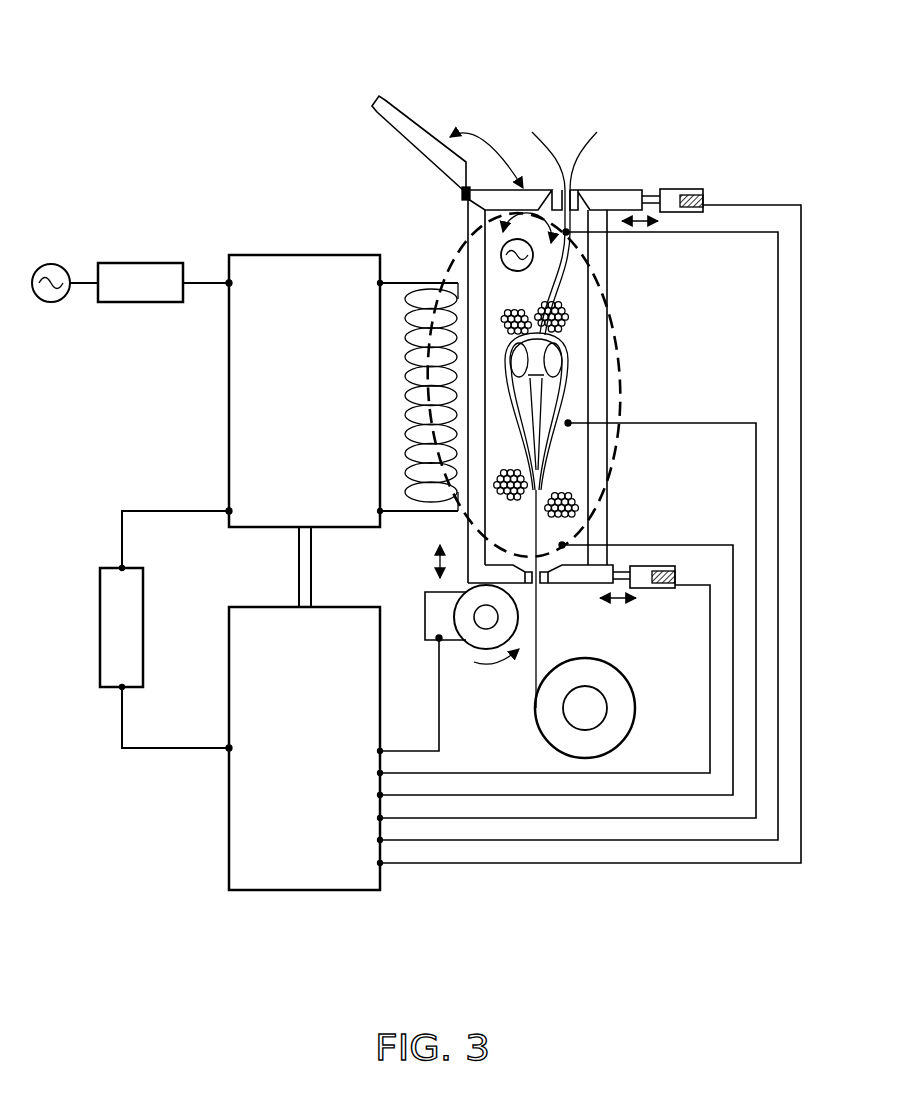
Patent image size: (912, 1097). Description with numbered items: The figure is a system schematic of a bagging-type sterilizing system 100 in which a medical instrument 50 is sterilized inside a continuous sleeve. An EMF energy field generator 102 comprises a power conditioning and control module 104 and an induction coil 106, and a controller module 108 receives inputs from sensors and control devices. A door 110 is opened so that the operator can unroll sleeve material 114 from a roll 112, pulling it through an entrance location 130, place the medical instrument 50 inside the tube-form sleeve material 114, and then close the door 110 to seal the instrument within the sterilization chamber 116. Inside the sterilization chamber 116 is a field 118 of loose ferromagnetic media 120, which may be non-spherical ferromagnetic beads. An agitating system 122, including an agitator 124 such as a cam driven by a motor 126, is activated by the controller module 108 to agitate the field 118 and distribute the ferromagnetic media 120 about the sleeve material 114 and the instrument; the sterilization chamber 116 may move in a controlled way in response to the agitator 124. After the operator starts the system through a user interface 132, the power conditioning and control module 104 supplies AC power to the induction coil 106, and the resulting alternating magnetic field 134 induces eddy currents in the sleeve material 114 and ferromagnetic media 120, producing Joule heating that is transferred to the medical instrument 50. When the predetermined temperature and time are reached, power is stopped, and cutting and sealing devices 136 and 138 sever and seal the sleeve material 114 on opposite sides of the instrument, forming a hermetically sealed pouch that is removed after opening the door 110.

The medical instrument 50 is at (510, 474).
The sterilizing system 100 is at (648, 85).
The EMF energy field generator 102 is at (180, 442).
The power conditioning and control module 104 is at (229, 362).
The induction coil 106 is at (410, 284).
The controller module 108 is at (278, 898).
The door 110 is at (400, 109).
The roll 112 is at (624, 740).
The sleeve material 114 is at (543, 668).
The sterilization chamber 116 is at (577, 390).
The field of loose ferromagnetic media 118 is at (577, 313).
The ferromagnetic media 120 is at (580, 508).
The agitating system 122 is at (418, 625).
The agitator 124 is at (488, 641).
The motor 126 is at (432, 622).
The entrance location 130 is at (550, 600).
The user interface 132 is at (100, 628).
The alternating magnetic field 134 is at (608, 404).
The cutting and sealing device 136 is at (643, 556).
The cutting and sealing device 138 is at (690, 177).